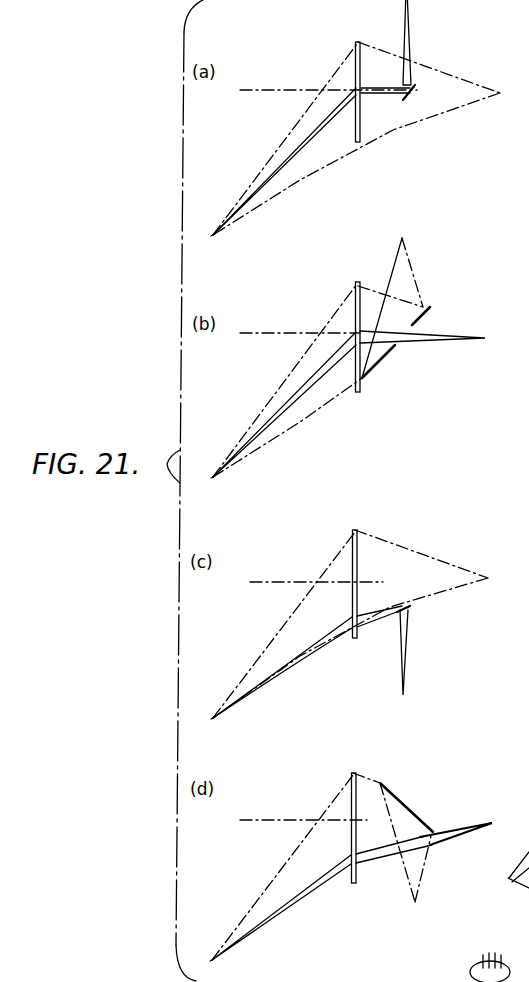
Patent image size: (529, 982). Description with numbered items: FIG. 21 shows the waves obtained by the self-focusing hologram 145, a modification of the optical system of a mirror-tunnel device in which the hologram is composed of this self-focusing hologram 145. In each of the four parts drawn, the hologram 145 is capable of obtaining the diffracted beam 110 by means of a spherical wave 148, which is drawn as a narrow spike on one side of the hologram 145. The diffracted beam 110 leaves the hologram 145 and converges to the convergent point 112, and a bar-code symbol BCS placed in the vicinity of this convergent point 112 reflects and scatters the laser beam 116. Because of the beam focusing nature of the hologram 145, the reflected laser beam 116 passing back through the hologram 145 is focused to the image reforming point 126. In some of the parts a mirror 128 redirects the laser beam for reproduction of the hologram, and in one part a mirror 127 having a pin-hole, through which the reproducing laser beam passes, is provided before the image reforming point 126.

The first order diffracted beam 110 is at (313, 140).
The laser beam focusing point 112 is at (213, 234).
The signal beam 116 is at (305, 110).
The image reforming point 126 is at (503, 94).
The mirror having a pin-hole 127 is at (380, 362).
The mirror 128 is at (413, 92).
The self-focusing hologram 145 is at (353, 45).
The spherical wave 148 is at (410, 50).